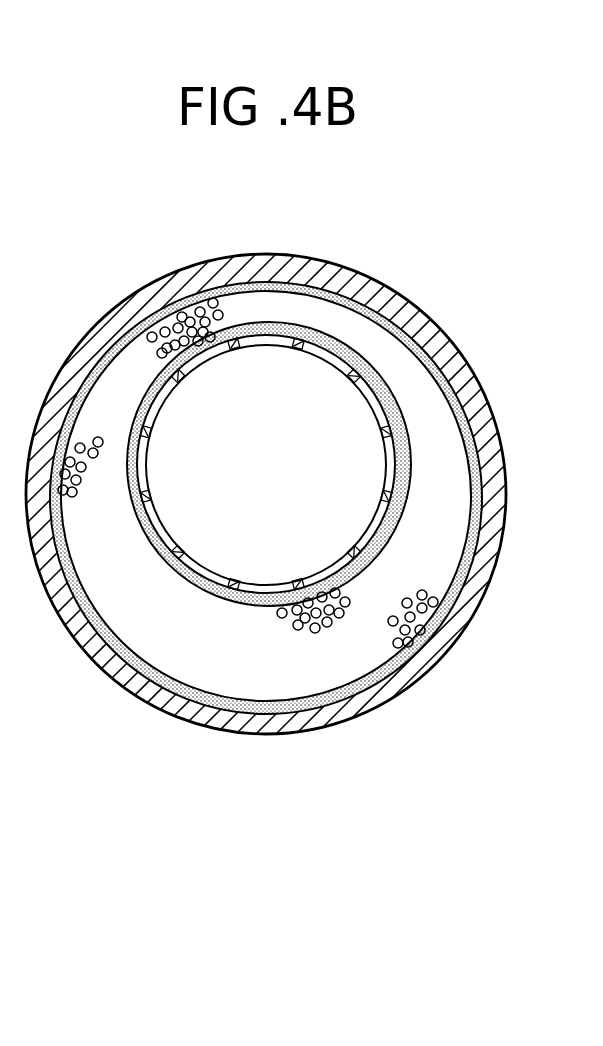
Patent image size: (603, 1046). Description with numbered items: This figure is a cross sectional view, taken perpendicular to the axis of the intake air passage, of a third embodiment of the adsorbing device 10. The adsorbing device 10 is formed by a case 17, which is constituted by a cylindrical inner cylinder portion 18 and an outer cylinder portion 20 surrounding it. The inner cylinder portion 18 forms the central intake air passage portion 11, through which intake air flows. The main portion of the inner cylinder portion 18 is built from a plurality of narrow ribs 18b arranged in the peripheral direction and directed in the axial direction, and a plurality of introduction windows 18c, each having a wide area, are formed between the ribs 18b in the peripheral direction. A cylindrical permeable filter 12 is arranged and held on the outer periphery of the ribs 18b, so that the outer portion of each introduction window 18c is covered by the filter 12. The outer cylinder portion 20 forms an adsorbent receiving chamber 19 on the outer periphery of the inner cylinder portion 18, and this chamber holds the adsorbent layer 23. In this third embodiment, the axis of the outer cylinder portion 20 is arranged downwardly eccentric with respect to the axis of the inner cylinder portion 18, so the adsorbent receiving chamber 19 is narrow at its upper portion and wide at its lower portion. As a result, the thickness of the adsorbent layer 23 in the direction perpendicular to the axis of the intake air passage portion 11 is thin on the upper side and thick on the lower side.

The adsorbing device 10 is at (312, 463).
The intake air passage portion 11 is at (283, 571).
The permeable filter 12 is at (203, 584).
The case 17 is at (347, 273).
The inner cylinder portion 18 is at (269, 464).
The ribs 18b is at (390, 433).
The introduction windows 18c is at (148, 430).
The adsorbent receiving chamber 19 is at (440, 455).
The outer cylinder portion 20 is at (103, 284).
The adsorbent layer 23 is at (228, 290).